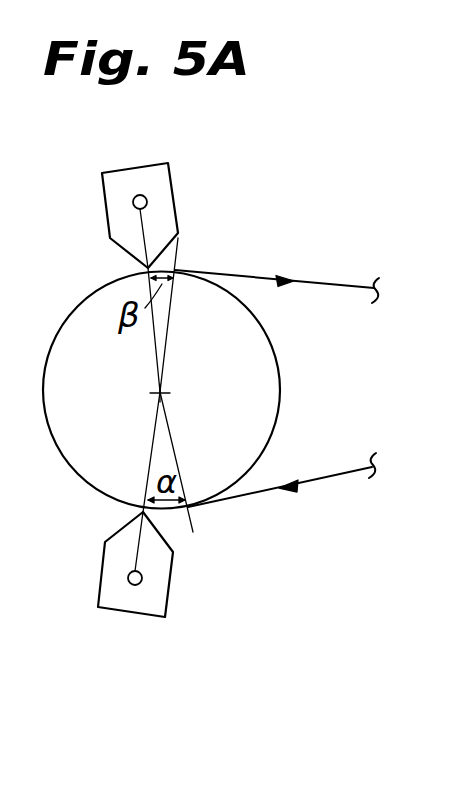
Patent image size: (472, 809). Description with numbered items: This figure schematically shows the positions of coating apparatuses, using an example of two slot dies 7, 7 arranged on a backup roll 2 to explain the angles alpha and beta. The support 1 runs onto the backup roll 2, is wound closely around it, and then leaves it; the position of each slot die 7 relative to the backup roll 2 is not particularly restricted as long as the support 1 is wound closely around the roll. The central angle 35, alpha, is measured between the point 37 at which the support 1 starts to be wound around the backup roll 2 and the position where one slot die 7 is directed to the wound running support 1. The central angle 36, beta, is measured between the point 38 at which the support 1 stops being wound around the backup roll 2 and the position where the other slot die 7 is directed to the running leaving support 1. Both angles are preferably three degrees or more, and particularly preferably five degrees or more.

The support 1 is at (308, 478).
The backup roll 2 is at (239, 408).
The slot die 7 is at (102, 192).
The central angle 35 is at (163, 468).
The central angle 36 is at (127, 332).
The point at which the support starts to be wound 37 is at (188, 512).
The point at which the support stops being wound 38 is at (178, 268).